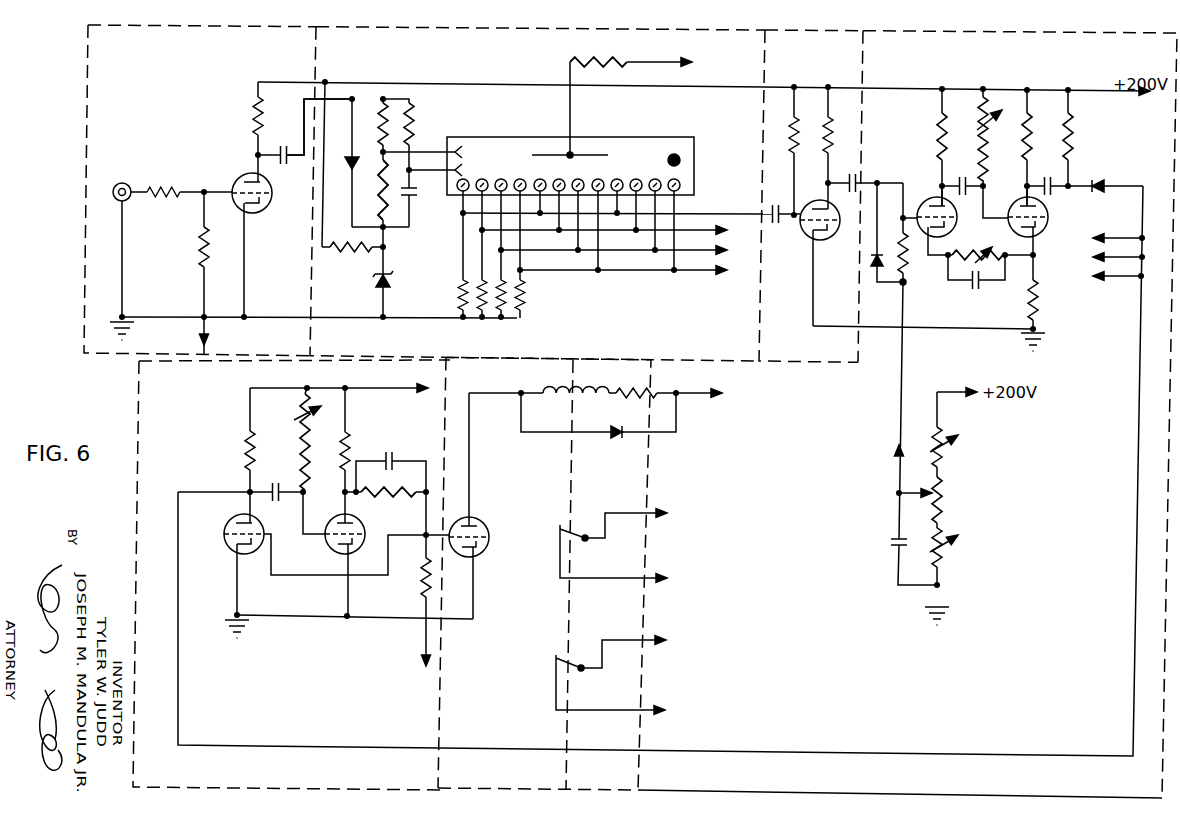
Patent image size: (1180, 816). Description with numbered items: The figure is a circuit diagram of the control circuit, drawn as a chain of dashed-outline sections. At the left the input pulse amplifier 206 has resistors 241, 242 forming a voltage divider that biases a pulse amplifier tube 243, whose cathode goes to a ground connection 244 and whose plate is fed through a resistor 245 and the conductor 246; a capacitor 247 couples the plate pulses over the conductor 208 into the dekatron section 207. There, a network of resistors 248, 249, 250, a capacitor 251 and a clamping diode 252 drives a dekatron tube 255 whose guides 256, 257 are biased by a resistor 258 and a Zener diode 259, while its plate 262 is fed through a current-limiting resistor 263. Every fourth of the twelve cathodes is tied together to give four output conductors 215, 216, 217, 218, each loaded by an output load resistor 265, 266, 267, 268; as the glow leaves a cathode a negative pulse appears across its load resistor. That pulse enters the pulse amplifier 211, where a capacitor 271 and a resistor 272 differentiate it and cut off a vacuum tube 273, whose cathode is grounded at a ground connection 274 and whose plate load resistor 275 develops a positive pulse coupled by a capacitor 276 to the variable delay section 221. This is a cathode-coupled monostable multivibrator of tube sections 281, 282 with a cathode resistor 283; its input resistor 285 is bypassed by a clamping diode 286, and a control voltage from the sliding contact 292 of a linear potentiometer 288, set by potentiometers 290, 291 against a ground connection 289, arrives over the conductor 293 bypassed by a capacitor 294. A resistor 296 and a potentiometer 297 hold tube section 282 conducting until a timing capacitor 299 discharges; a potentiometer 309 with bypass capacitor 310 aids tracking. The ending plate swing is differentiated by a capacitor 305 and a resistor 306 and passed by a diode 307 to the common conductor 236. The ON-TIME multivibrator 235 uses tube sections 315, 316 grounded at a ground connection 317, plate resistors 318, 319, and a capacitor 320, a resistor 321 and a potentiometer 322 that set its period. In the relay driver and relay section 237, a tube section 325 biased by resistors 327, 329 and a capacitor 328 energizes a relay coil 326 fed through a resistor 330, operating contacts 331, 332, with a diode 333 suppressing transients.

The input pulse amplifier 206 is at (203, 81).
The dekatron section 207 is at (652, 335).
The pulse amplifier 211 is at (800, 73).
The variable delay section 221 is at (918, 80).
The ON-TIME multivibrator 235 is at (324, 727).
The common conductor 236 is at (180, 707).
The relay driver and relay section 237 is at (508, 733).
The conductor 208 is at (301, 158).
The output conductor 215 is at (718, 213).
The output conductor 216 is at (718, 230).
The output conductor 217 is at (718, 250).
The output conductor 218 is at (718, 270).
The resistor 241 is at (170, 189).
The resistor 242 is at (198, 243).
The pulse amplifier tube 243 is at (240, 174).
The ground connection 244 is at (129, 330).
The resistor 245 is at (254, 112).
The conductor 246 is at (497, 83).
The capacitor 247 is at (282, 146).
The resistor 248 is at (390, 116).
The resistor 249 is at (396, 206).
The resistor 250 is at (415, 120).
The capacitor 251 is at (413, 196).
The clamping diode 252 is at (344, 153).
The dekatron tube 255 is at (541, 137).
The guide 256 is at (423, 150).
The guide 257 is at (442, 173).
The resistor 258 is at (348, 258).
The Zener diode 259 is at (393, 281).
The plate 262 is at (598, 155).
The resistor 263 is at (619, 64).
The output load resistor 265 is at (458, 296).
The output load resistor 266 is at (470, 320).
The output load resistor 267 is at (492, 322).
The output load resistor 268 is at (525, 303).
The capacitor 271 is at (776, 228).
The resistor 272 is at (788, 132).
The vacuum tube 273 is at (820, 240).
The ground connection 274 is at (1046, 333).
The load resistor 275 is at (836, 128).
The capacitor 276 is at (857, 174).
The tube section 281 is at (913, 243).
The tube section 282 is at (1049, 214).
The resistor 283 is at (1038, 300).
The grid resistor 285 is at (905, 284).
The diode 286 is at (876, 274).
The linear potentiometer 288 is at (948, 497).
The ground connection 289 is at (950, 613).
The potentiometer 290 is at (950, 457).
The potentiometer 291 is at (948, 552).
The sliding contact 292 is at (908, 491).
The conductor 293 is at (899, 409).
The capacitor 294 is at (893, 543).
The resistor 296 is at (989, 163).
The potentiometer 297 is at (1010, 93).
The timing capacitor 299 is at (963, 178).
The capacitor 305 is at (1048, 178).
The resistor 306 is at (1074, 141).
The diode 307 is at (1101, 180).
The potentiometer 309 is at (968, 252).
The capacitor 310 is at (982, 290).
The tube section 315 is at (228, 547).
The tube section 316 is at (358, 528).
The ground connection 317 is at (250, 640).
The resistor 318 is at (245, 444).
The resistor 319 is at (351, 438).
The capacitor 320 is at (281, 500).
The resistor 321 is at (302, 466).
The potentiometer 322 is at (299, 412).
The tube section 325 is at (487, 525).
The relay coil 326 is at (545, 387).
The resistor 327 is at (404, 489).
The capacitor 328 is at (413, 454).
The resistor 329 is at (417, 565).
The resistor 330 is at (643, 391).
The contacts 331 is at (559, 536).
The contacts 332 is at (555, 658).
The diode 333 is at (617, 442).